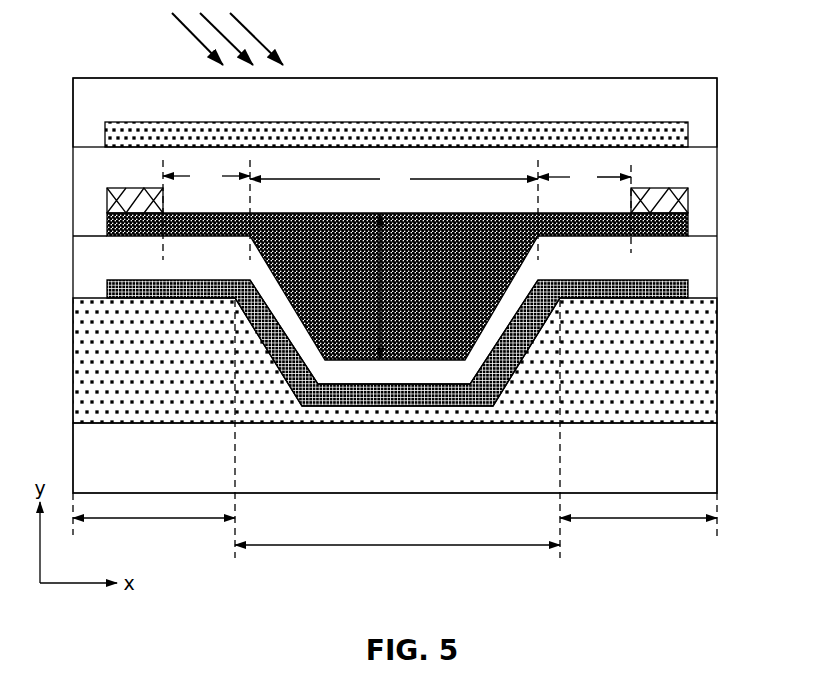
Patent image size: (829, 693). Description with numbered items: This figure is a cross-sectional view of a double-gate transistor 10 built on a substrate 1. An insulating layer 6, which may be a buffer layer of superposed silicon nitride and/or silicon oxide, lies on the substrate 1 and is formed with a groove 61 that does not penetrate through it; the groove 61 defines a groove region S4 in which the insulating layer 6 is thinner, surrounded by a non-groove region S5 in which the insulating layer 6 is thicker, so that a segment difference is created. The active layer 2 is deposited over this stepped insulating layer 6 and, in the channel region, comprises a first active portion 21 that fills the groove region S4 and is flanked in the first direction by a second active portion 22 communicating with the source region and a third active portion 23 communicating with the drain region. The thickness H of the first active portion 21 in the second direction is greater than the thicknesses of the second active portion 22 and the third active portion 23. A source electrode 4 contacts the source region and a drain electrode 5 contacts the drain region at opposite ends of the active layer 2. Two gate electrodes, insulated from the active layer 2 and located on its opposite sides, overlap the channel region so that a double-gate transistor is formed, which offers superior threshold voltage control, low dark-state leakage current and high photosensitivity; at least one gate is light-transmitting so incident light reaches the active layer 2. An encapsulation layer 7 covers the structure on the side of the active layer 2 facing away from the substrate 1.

The transistor 10 is at (71, 44).
The encapsulation layer 7 is at (717, 97).
The source electrode 4 is at (107, 203).
The drain electrode 5 is at (688, 198).
The active layer 2 is at (688, 226).
The second active portion 22 is at (200, 224).
The first active portion 21 is at (394, 210).
The third active portion 23 is at (586, 222).
The insulating layer 6 is at (717, 359).
The groove 61 is at (507, 393).
The substrate 1 is at (717, 459).
The thickness of the first active portion H is at (390, 286).
The groove region S4 is at (397, 560).
The non-groove region S5 is at (395, 429).